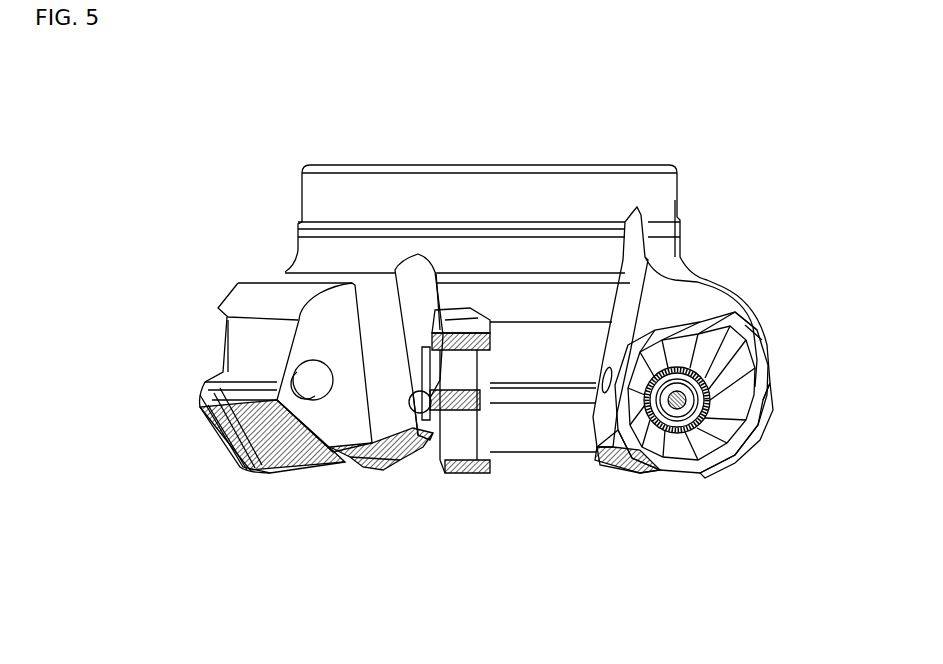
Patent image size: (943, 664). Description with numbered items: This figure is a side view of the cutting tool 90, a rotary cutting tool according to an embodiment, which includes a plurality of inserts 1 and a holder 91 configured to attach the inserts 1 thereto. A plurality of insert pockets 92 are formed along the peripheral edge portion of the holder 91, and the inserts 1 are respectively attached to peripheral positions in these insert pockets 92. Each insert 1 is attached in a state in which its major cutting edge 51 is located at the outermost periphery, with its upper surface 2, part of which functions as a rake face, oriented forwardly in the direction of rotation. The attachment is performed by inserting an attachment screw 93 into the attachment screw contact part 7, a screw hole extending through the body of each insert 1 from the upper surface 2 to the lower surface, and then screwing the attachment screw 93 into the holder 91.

The cutting tool 90 is at (703, 170).
The holder 91 is at (343, 193).
The insert pocket 92 is at (737, 318).
The attachment screw 93 is at (638, 477).
The upper surface 2 is at (697, 358).
The attachment screw contact part 7 is at (698, 477).
The major cutting edge 51 is at (733, 455).
The insert 1 is at (266, 474).